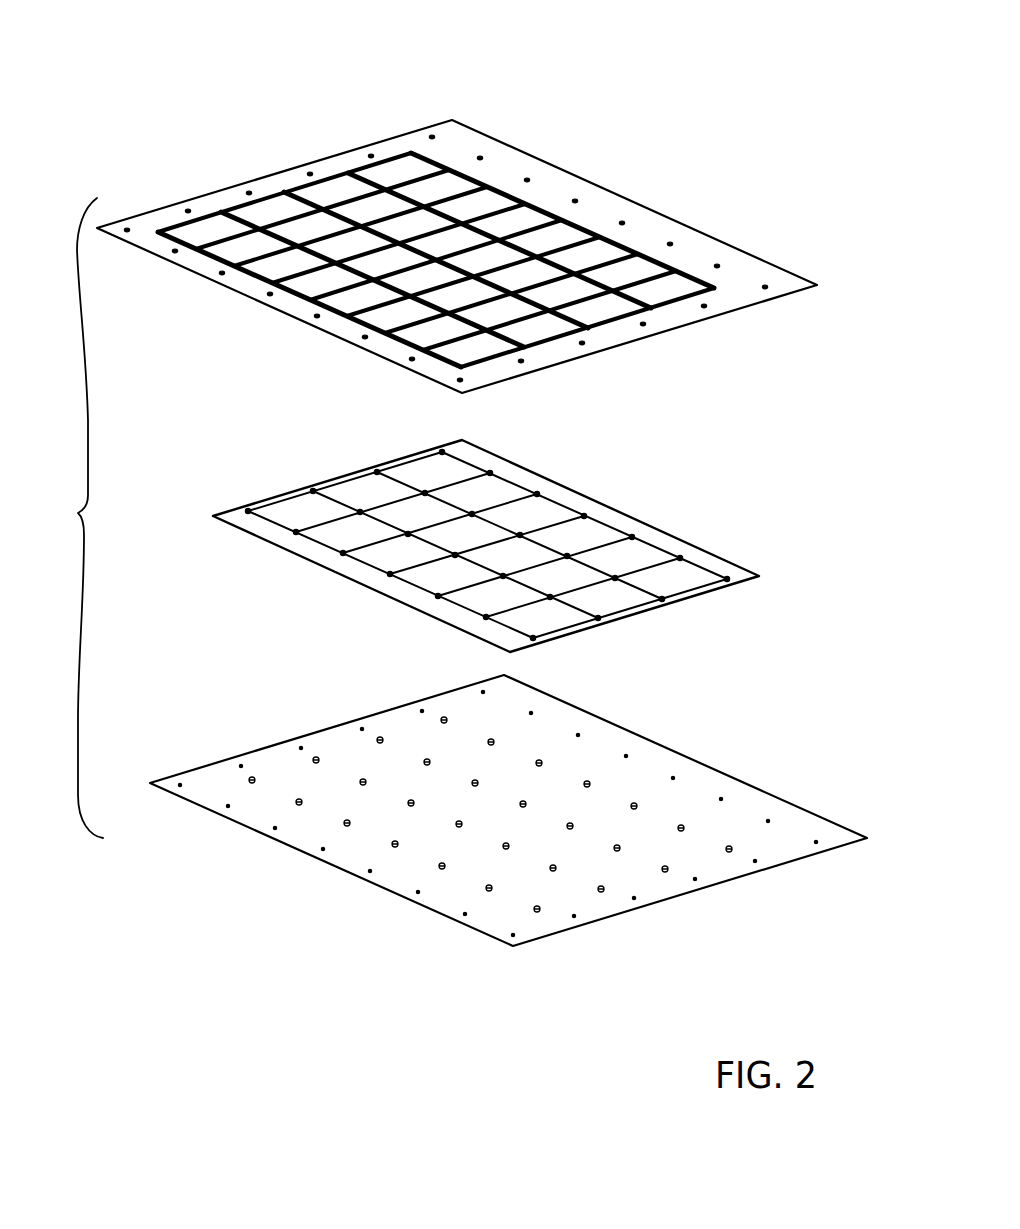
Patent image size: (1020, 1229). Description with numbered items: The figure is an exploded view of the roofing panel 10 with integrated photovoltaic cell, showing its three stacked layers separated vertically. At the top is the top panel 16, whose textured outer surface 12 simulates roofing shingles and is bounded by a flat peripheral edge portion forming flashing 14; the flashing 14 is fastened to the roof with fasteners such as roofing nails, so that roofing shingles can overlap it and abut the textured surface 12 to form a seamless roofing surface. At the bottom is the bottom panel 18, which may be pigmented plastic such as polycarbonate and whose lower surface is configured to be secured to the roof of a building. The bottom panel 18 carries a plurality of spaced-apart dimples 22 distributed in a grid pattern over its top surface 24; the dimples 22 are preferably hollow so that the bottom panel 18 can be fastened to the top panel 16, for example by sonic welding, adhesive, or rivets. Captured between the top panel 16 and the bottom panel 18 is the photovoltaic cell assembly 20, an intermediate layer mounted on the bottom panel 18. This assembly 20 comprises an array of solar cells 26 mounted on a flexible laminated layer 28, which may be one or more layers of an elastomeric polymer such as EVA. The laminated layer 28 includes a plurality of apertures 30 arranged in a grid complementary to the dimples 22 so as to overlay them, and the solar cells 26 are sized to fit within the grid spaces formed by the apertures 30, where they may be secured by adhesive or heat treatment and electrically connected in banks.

The roofing panel 10 is at (61, 471).
The textured outer surface 12 is at (395, 172).
The flashing 14 is at (768, 277).
The top panel 16 is at (457, 203).
The bottom panel 18 is at (508, 837).
The photovoltaic cell assembly 20 is at (531, 533).
The dimples 22 is at (489, 890).
The top surface 24 is at (628, 877).
The solar cells 26 is at (632, 557).
The laminated layer 28 is at (525, 473).
The apertures 30 is at (440, 595).